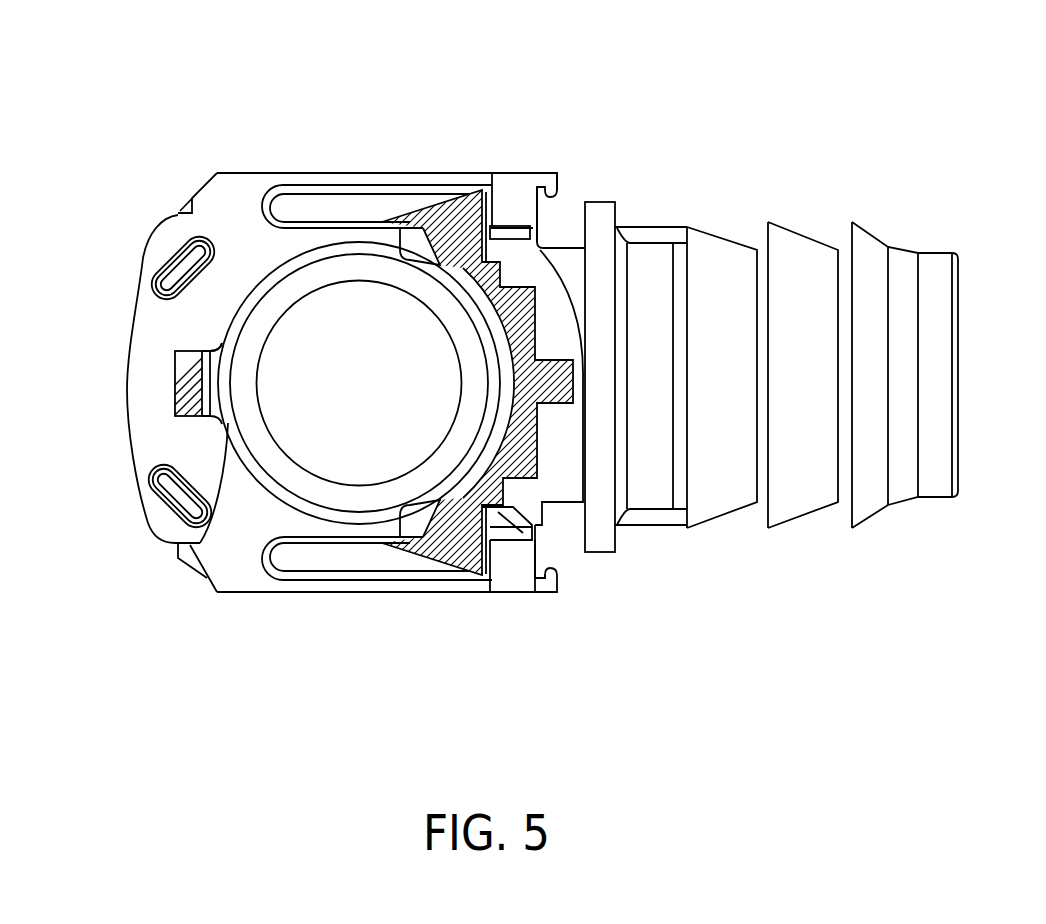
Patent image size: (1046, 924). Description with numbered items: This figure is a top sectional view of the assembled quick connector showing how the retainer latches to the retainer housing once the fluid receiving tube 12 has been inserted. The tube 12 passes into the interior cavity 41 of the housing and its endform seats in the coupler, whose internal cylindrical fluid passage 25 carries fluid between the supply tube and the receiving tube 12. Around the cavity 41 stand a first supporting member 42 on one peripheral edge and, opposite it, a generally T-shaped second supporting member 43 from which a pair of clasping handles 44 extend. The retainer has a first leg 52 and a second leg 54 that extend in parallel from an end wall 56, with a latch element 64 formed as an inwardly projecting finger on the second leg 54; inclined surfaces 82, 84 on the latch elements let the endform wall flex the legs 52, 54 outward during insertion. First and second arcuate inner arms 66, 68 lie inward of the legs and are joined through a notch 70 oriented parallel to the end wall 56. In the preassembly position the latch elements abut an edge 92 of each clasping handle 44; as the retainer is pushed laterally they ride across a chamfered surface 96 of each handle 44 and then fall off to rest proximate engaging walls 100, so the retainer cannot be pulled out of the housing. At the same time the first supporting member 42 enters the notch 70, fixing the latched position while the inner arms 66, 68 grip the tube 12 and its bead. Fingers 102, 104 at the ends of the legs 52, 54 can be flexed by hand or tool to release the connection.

The fluid receiving tube 12 is at (287, 498).
The internal cylindrical fluid passage 25 is at (220, 538).
The interior cavity 41 is at (258, 271).
The first supporting member 42 is at (180, 384).
The second supporting member 43 is at (556, 382).
The clasping handles 44 is at (468, 228).
The first leg 52 is at (371, 594).
The second leg 54 is at (372, 172).
The end wall 56 is at (137, 346).
The latch element 64 is at (513, 200).
The first arcuate inner arm 66 is at (319, 549).
The second arcuate inner arm 68 is at (316, 221).
The notch 70 is at (205, 338).
The inclined surface 82 is at (535, 541).
The inclined surface 84 is at (587, 215).
The edge 92 is at (388, 224).
The chamfered surface 96 is at (440, 225).
The engaging wall 100 is at (483, 227).
The finger 102 is at (558, 586).
The finger 104 is at (543, 247).